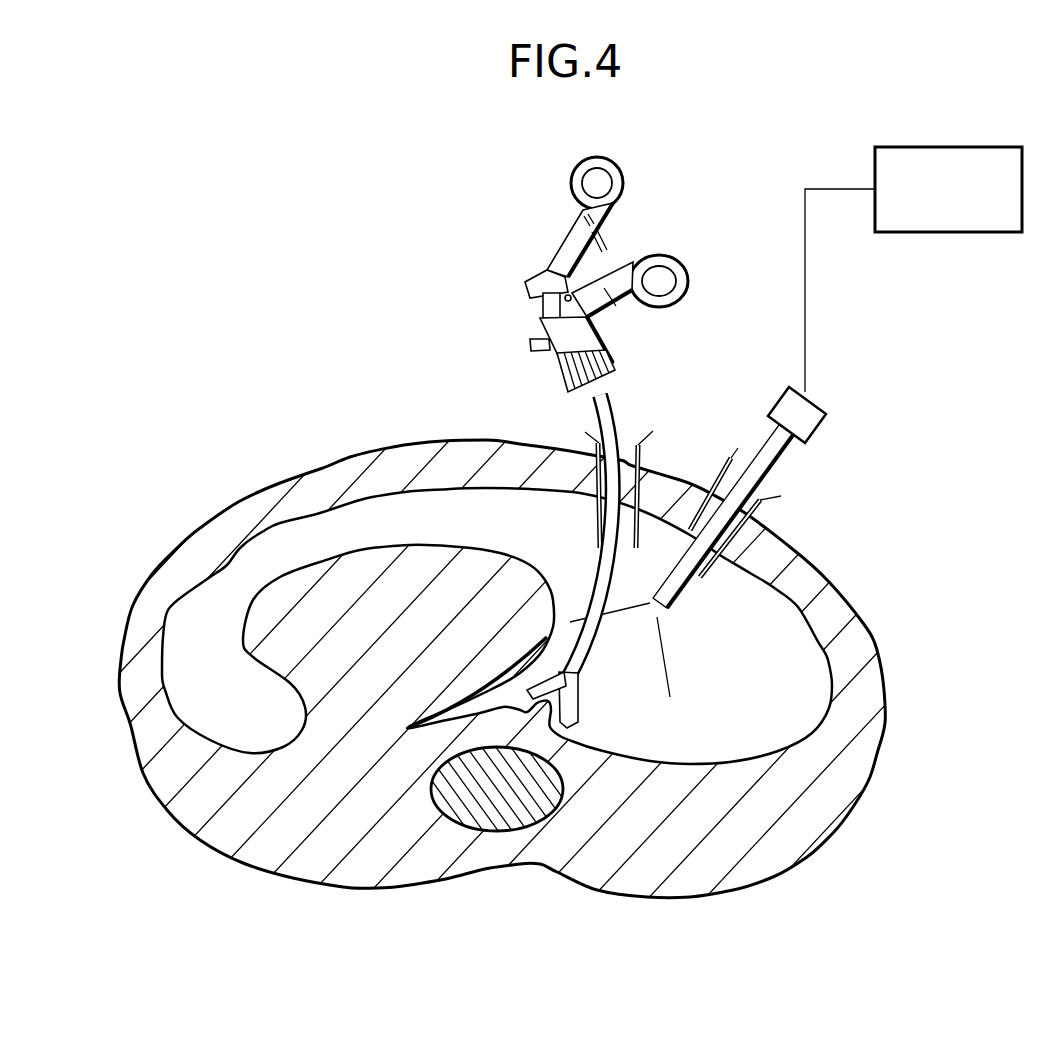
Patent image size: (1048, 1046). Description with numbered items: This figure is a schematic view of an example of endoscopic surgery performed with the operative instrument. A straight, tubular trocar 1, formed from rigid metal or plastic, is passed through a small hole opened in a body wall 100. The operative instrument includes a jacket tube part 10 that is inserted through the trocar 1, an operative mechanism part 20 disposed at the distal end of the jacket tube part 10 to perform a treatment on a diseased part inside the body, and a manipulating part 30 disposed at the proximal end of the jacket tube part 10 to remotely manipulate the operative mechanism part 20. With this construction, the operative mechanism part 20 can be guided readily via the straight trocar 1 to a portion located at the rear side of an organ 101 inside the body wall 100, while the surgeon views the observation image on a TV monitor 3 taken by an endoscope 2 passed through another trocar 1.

The trocar 1 is at (642, 456).
The endoscope 2 is at (779, 462).
The TV monitor 3 is at (951, 147).
The jacket tube part 10 is at (600, 562).
The operative mechanism part 20 is at (586, 718).
The manipulating part 30 is at (612, 338).
The body wall 100 is at (457, 440).
The organ 101 is at (360, 573).